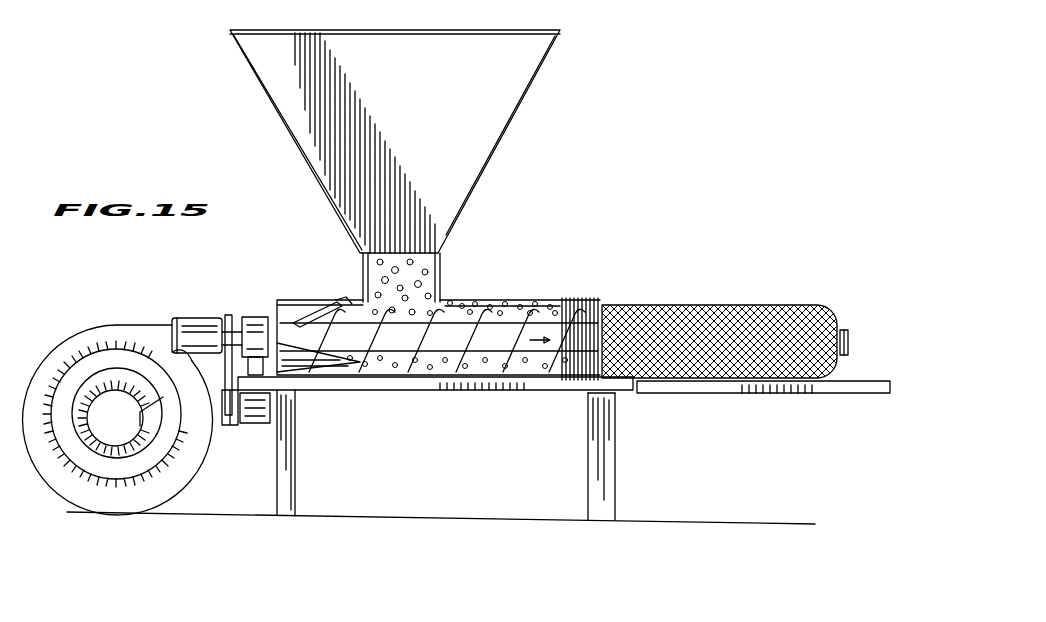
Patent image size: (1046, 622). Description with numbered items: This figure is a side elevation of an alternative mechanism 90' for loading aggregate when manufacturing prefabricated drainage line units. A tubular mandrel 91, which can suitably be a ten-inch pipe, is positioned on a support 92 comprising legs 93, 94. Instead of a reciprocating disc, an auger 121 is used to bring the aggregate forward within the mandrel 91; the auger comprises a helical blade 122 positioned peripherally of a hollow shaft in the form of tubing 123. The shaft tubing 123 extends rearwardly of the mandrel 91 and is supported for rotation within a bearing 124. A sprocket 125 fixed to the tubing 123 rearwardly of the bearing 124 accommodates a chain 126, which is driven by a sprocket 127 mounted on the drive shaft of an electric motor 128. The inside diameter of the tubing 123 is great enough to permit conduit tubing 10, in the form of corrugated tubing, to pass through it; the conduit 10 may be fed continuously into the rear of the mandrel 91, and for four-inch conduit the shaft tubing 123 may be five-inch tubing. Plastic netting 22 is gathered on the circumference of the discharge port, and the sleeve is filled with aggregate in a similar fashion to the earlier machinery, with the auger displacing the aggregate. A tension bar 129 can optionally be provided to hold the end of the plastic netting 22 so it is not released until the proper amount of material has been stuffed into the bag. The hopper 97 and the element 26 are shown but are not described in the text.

The tubing 10 is at (82, 331).
The hopper 97 is at (477, 187).
The sprocket 125 is at (222, 348).
The bearing 124 is at (250, 313).
The chain 126 is at (222, 385).
The sprocket 127 is at (273, 448).
The electric motor 128 is at (297, 408).
The leg 93 is at (297, 467).
The support 92 is at (613, 412).
The leg 94 is at (616, 498).
The auger 121 is at (394, 340).
The tension bar 129 is at (497, 378).
The tubing 123 is at (297, 340).
The tubular mandrel 91 is at (340, 300).
The helical blade 122 is at (477, 277).
The alternative mechanism 90' is at (651, 303).
The plastic netting 22 is at (750, 305).
The end cap 26 is at (840, 329).